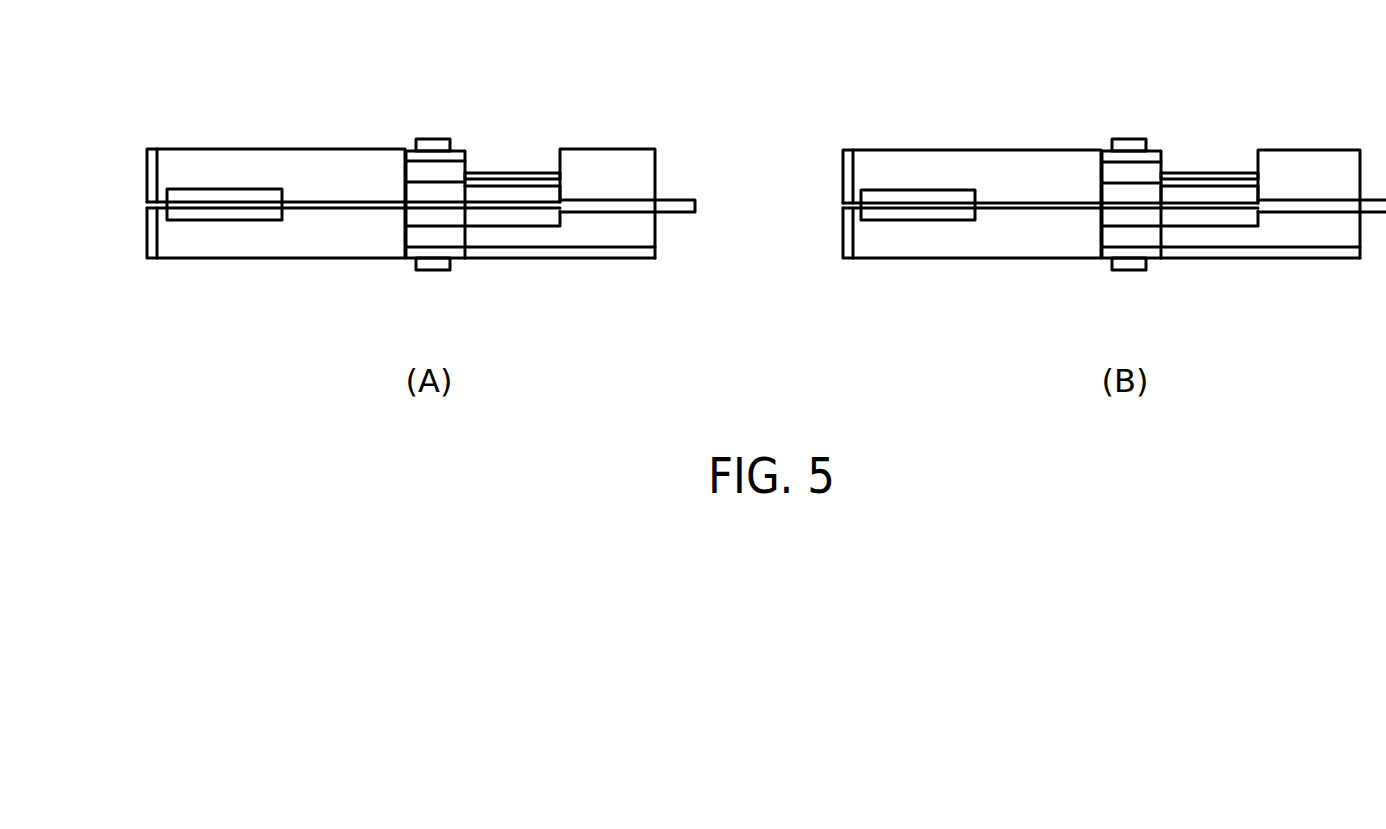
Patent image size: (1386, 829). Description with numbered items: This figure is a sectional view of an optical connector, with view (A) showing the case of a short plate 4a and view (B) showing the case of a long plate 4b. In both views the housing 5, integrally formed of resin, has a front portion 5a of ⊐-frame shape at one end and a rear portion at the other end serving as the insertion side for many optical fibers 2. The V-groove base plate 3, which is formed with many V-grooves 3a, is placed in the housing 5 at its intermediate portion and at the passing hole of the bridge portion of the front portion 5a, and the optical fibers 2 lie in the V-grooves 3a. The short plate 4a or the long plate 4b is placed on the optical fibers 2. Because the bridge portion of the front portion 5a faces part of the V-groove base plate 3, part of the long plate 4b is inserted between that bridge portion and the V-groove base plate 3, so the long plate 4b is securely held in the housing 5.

The optical fibers 2 is at (337, 210).
The V-groove base plate 3 is at (1205, 297).
The V-grooves 3a is at (390, 117).
The short plate 4a is at (507, 192).
The long plate 4b is at (1201, 192).
The housing 5 is at (363, 122).
The front portion 5a is at (417, 192).